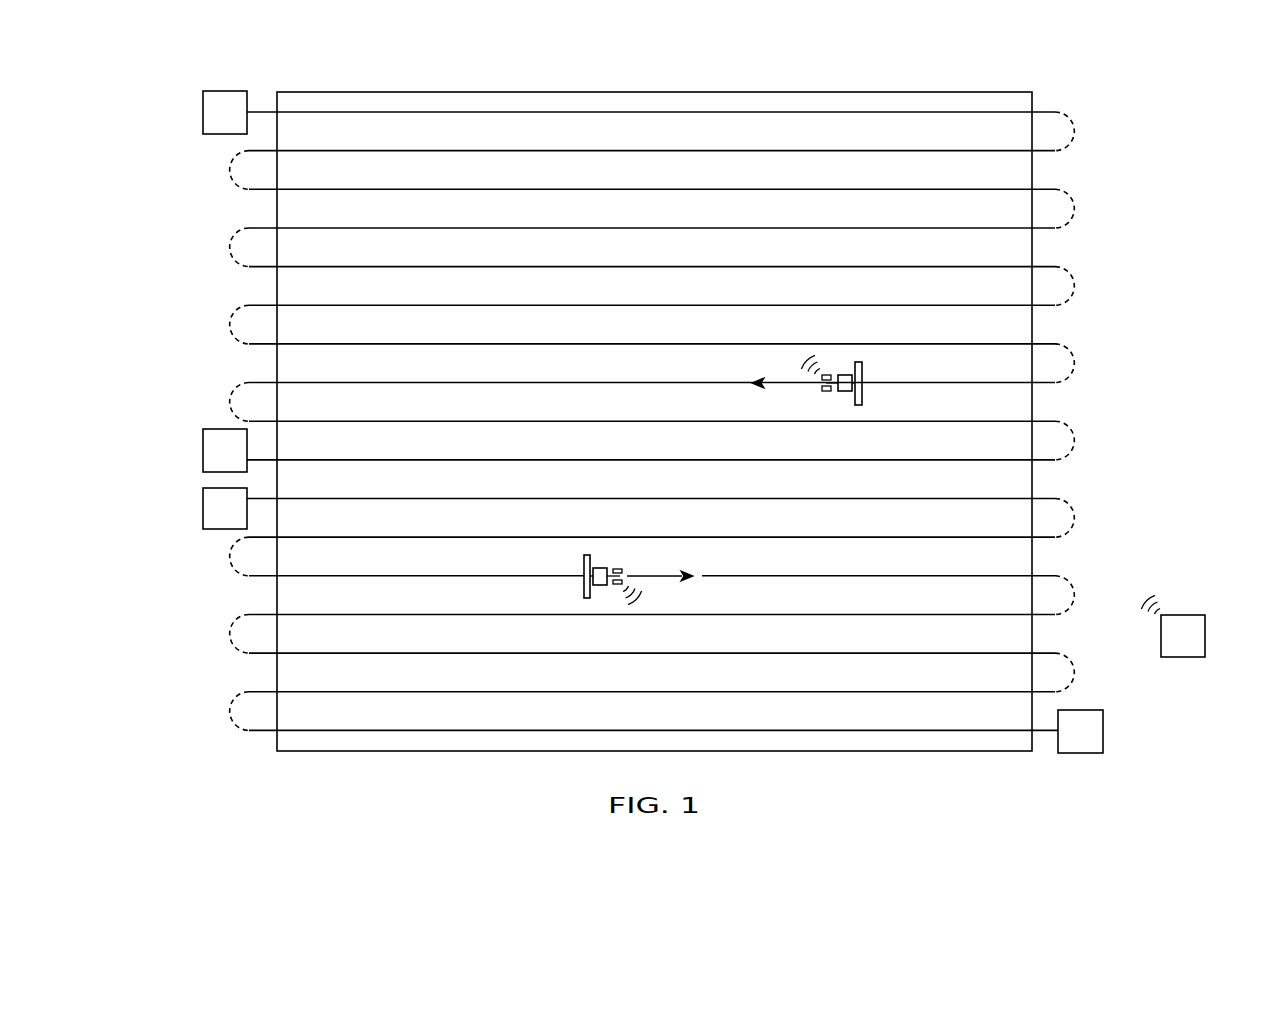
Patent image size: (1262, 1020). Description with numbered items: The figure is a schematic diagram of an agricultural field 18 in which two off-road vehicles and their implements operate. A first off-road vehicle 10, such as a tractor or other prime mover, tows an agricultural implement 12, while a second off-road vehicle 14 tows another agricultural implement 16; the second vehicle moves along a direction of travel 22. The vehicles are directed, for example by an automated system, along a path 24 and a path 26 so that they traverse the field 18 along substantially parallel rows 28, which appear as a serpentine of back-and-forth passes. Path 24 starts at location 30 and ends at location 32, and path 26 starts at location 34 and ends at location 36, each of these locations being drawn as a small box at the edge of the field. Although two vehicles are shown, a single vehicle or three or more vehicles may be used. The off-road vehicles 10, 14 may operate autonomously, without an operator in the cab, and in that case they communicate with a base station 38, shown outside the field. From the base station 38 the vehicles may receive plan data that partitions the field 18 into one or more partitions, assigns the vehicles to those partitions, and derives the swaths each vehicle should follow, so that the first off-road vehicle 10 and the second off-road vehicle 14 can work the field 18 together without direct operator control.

The first off-road vehicle 10 is at (840, 375).
The agricultural implement 12 is at (862, 386).
The second off-road vehicle 14 is at (606, 587).
The agricultural implement 16 is at (790, 384).
The agricultural field 18 is at (853, 712).
The direction of travel 22 is at (655, 575).
The path 24 is at (259, 112).
The path 26 is at (262, 500).
The rows 28 is at (1050, 112).
The location 30 is at (203, 113).
The location 32 is at (203, 450).
The location 34 is at (203, 510).
The location 36 is at (1103, 727).
The base station 38 is at (1182, 615).